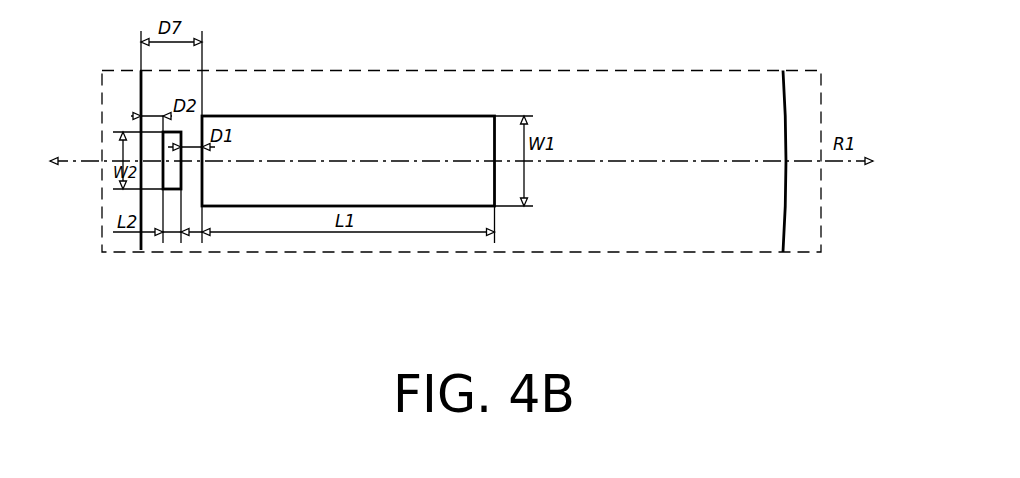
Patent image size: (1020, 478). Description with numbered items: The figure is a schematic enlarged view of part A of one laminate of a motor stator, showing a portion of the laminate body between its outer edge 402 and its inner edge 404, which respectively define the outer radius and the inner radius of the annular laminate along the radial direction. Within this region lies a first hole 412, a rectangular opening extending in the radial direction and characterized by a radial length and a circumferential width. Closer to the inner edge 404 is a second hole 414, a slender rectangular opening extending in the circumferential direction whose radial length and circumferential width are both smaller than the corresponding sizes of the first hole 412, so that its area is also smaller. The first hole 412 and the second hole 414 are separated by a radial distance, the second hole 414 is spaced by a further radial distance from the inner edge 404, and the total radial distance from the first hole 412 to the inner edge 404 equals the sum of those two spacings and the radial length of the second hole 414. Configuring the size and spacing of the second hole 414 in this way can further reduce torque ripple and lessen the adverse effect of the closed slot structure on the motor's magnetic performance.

The outer edge 402 is at (785, 220).
The inner edge 404 is at (140, 87).
The first hole 412 is at (335, 138).
The second hole 414 is at (177, 175).
The part A is at (602, 70).